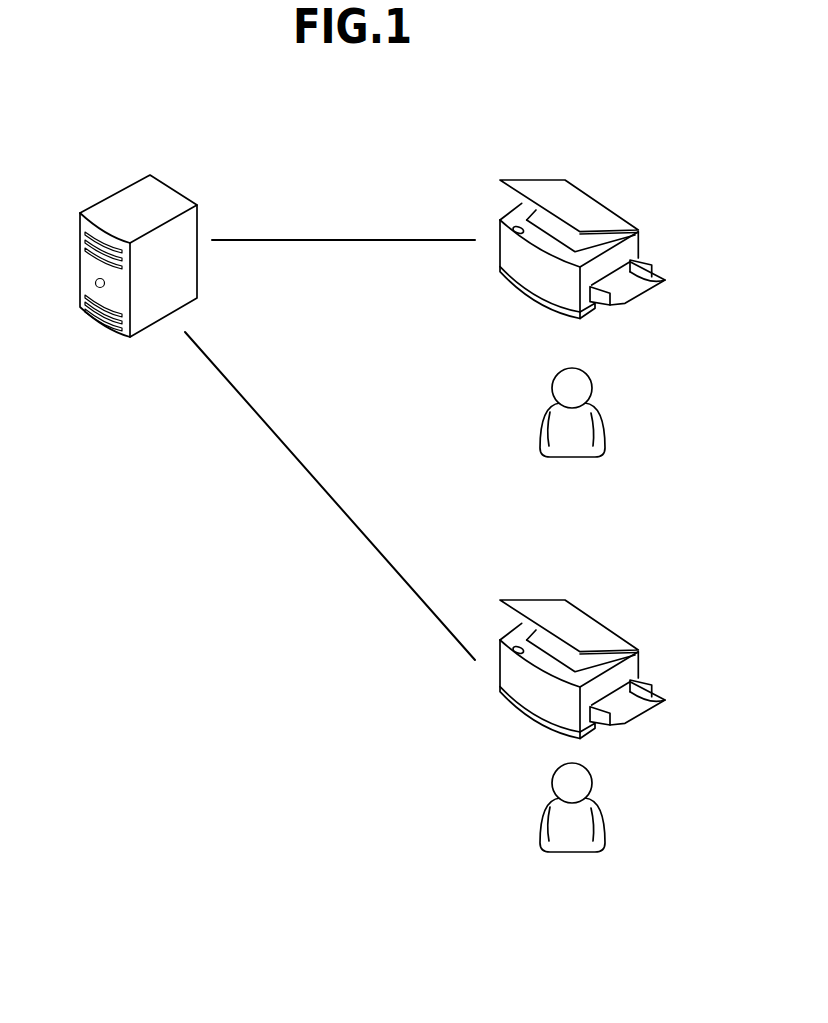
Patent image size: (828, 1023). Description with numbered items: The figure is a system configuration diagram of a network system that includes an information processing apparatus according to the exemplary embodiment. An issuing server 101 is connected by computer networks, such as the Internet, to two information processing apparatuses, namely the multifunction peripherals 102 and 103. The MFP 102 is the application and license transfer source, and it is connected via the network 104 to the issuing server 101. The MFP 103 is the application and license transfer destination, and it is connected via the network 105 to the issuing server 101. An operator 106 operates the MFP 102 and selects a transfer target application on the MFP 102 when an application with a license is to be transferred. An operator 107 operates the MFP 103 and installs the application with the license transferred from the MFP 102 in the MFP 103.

The issuing server 101 is at (163, 183).
The multifunction peripheral 102 is at (542, 178).
The multifunction peripheral 103 is at (542, 598).
The network 104 is at (333, 238).
The network 105 is at (340, 507).
The operator 106 is at (538, 437).
The operator 107 is at (538, 832).